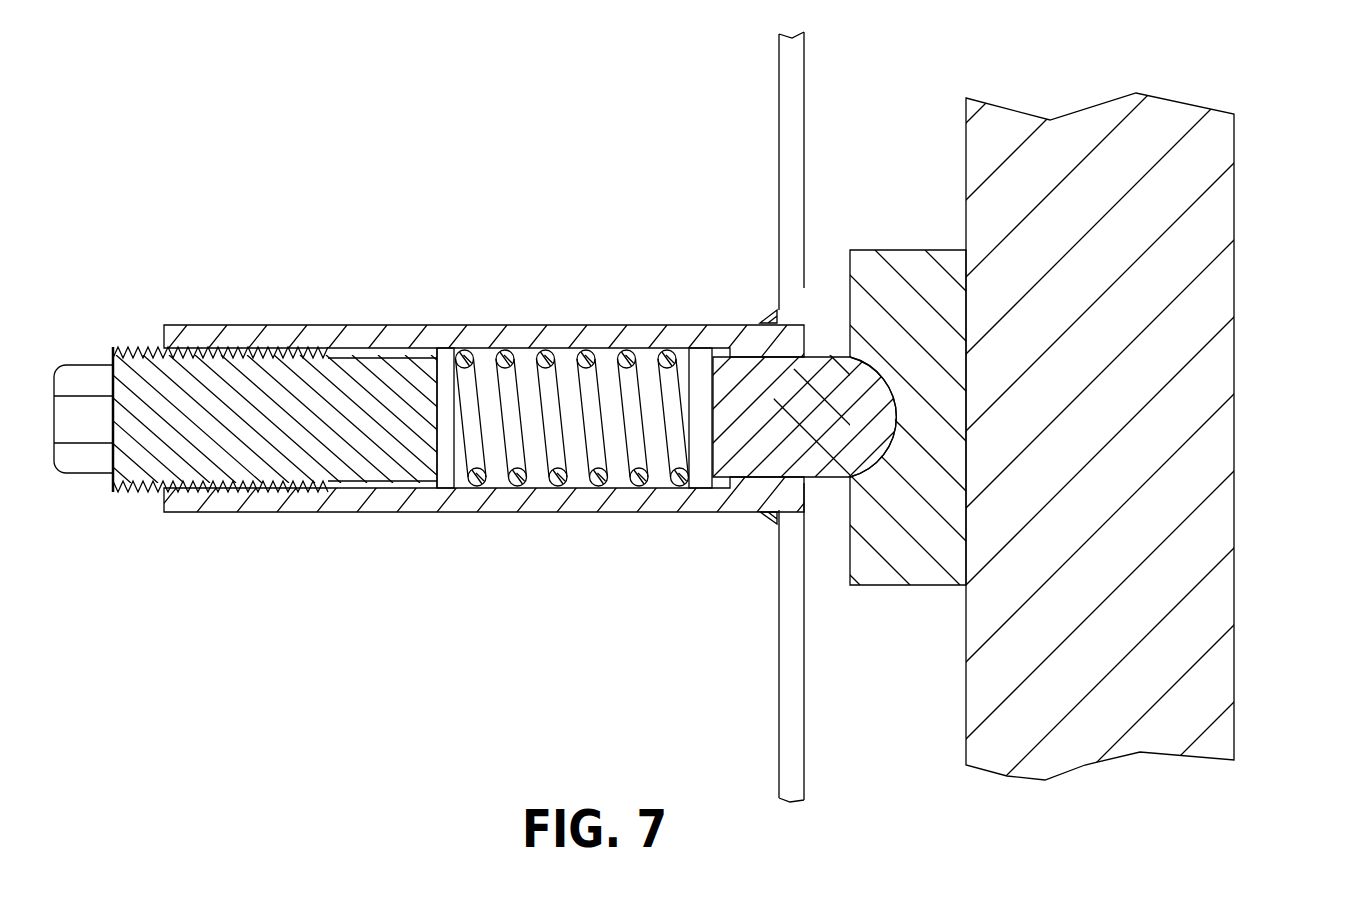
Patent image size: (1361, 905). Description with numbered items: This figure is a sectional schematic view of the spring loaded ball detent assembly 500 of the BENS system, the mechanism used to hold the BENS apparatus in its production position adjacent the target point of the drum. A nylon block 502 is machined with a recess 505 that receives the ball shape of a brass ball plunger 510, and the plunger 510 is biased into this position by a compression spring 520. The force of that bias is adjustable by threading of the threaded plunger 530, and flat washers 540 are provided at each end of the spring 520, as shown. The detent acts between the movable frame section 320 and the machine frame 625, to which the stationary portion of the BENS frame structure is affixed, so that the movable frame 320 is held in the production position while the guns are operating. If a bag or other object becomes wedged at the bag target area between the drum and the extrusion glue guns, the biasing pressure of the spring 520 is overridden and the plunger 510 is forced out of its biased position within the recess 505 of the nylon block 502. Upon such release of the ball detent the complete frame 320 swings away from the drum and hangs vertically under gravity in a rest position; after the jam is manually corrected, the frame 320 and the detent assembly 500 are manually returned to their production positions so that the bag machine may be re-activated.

The movable frame section 320 is at (778, 146).
The ball detent assembly 500 is at (376, 285).
The nylon block 502 is at (915, 250).
The recess 505 is at (893, 440).
The brass ball plunger 510 is at (835, 440).
The compression spring 520 is at (580, 490).
The threaded plunger 530 is at (138, 495).
The flat washers 540 is at (447, 490).
The machine frame 625 is at (1197, 483).